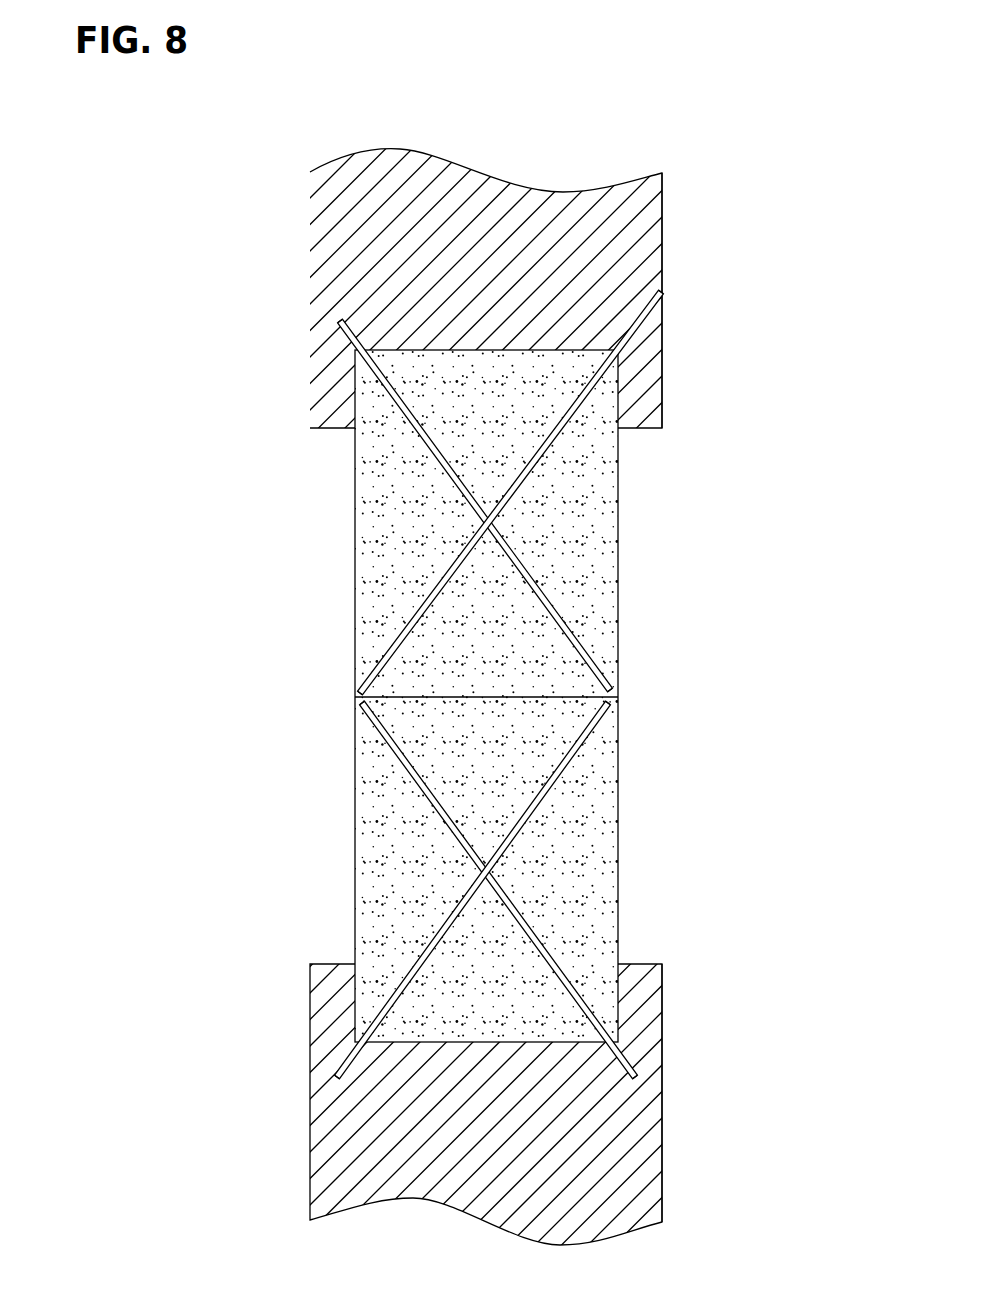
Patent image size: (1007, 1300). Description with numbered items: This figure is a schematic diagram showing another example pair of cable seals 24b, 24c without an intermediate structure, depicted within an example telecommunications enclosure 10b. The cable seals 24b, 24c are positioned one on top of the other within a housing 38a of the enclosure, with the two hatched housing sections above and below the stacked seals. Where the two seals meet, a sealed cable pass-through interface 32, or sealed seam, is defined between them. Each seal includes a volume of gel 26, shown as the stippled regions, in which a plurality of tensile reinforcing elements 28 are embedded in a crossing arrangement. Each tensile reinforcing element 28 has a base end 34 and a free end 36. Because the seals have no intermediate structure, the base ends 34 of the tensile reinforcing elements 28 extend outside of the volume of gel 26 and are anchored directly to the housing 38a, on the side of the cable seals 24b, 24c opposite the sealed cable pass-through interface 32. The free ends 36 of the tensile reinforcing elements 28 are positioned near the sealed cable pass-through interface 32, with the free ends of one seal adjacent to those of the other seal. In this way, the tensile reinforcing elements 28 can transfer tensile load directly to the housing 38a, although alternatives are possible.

The enclosure 10b is at (720, 150).
The cable seal 24b is at (325, 917).
The cable seal 24c is at (325, 591).
The volume of gel 26 is at (575, 540).
The tensile reinforcing elements 28 is at (420, 430).
The sealed cable pass-through interface 32 is at (430, 697).
The base end 34 is at (340, 321).
The free end 36 is at (612, 692).
The housing 38a is at (662, 248).